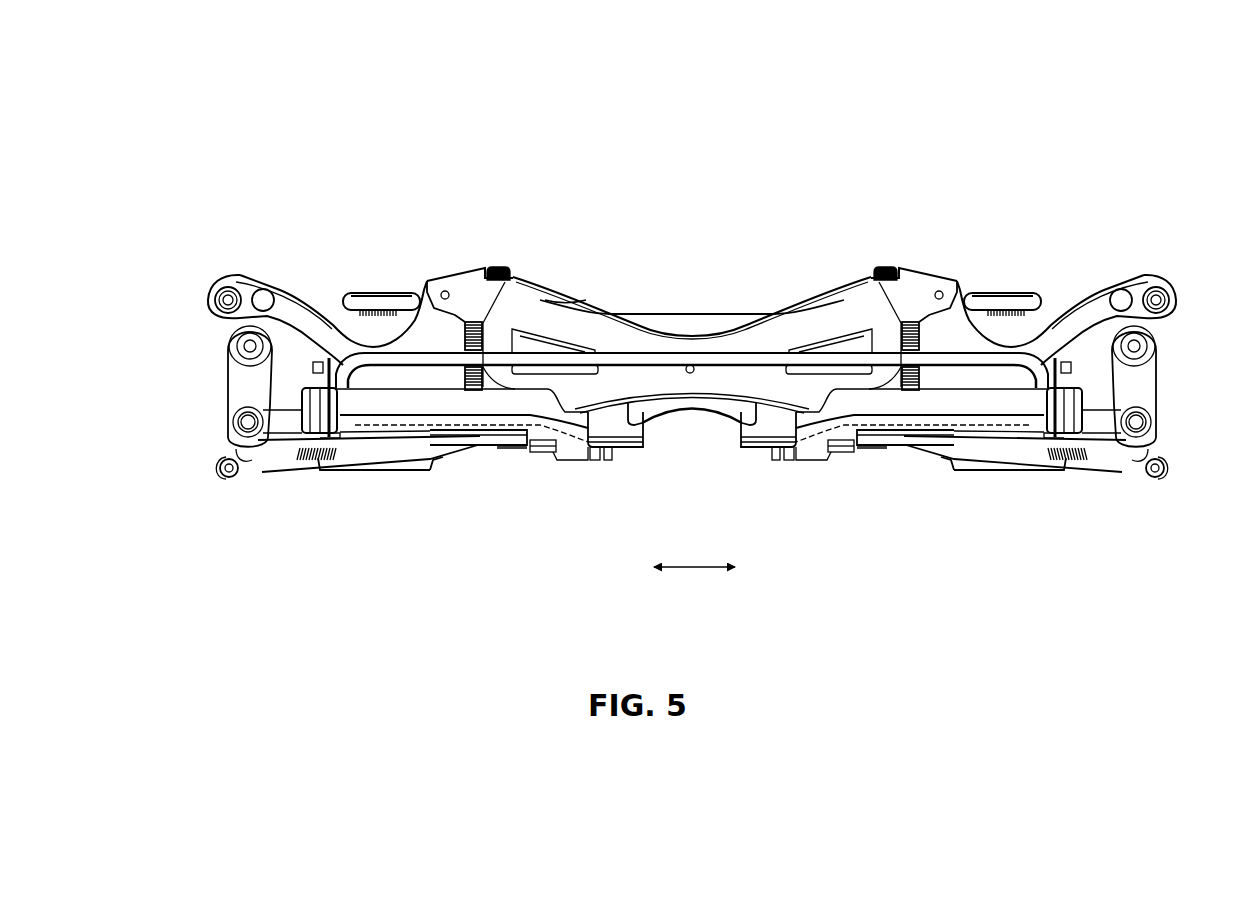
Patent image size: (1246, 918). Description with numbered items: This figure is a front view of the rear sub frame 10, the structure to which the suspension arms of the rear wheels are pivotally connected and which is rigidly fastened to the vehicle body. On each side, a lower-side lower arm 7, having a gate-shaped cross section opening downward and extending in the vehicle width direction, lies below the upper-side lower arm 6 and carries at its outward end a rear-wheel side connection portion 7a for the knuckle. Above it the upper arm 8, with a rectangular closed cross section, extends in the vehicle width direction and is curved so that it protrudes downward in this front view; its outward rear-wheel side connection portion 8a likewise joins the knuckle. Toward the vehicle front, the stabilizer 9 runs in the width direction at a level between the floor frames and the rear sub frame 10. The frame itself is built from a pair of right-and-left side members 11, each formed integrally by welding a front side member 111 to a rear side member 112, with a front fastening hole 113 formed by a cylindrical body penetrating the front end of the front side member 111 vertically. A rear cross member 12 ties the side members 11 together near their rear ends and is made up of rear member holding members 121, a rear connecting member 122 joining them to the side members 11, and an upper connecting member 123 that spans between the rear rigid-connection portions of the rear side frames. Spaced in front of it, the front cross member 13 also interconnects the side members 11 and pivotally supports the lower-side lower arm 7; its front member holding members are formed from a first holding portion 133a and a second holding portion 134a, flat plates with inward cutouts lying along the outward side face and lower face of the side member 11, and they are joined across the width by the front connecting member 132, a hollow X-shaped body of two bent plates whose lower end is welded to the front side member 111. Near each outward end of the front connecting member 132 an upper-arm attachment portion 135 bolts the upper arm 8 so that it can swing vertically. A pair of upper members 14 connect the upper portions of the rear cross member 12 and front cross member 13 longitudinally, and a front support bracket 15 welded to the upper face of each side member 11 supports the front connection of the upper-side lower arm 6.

The rear sub frame 10 is at (306, 93).
The upper-side lower arm 6 is at (415, 474).
The lower-side lower arm 7 is at (262, 481).
The rear-wheel side connection portion 7a is at (220, 460).
The upper arm 8 is at (286, 284).
The rear-wheel side connection portion 8a is at (215, 306).
The stabilizer 9 is at (640, 375).
The side member 11 is at (584, 462).
The rear cross member 12 is at (357, 286).
The front cross member 13 is at (830, 287).
The upper member 14 is at (509, 261).
The front support bracket 15 is at (470, 313).
The front side member 111 is at (390, 432).
The rear side member 112 is at (626, 452).
The front fastening hole 113 is at (339, 438).
The rear member holding member 121 is at (600, 461).
The rear connecting member 122 is at (718, 432).
The upper connecting member 123 is at (690, 320).
The front connecting member 132 is at (585, 300).
The first holding portion 133a is at (539, 473).
The second holding portion 134a is at (439, 460).
The upper-arm attachment portion 135 is at (421, 265).